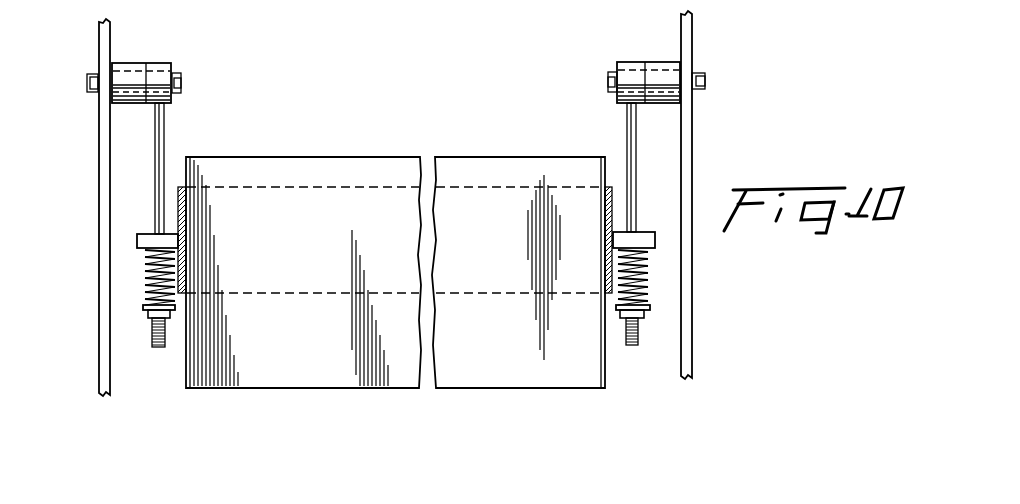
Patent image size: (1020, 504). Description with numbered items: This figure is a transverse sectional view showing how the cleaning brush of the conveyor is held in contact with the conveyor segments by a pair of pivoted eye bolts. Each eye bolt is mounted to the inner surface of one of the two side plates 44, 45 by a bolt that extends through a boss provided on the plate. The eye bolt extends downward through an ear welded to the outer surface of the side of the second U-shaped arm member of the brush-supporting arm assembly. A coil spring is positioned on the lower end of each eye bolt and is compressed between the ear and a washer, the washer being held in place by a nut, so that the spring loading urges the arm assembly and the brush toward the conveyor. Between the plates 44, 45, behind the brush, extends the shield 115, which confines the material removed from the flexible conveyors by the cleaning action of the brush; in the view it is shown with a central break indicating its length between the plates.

The plate 44 is at (688, 143).
The plate 45 is at (102, 223).
The shield 115 is at (438, 160).